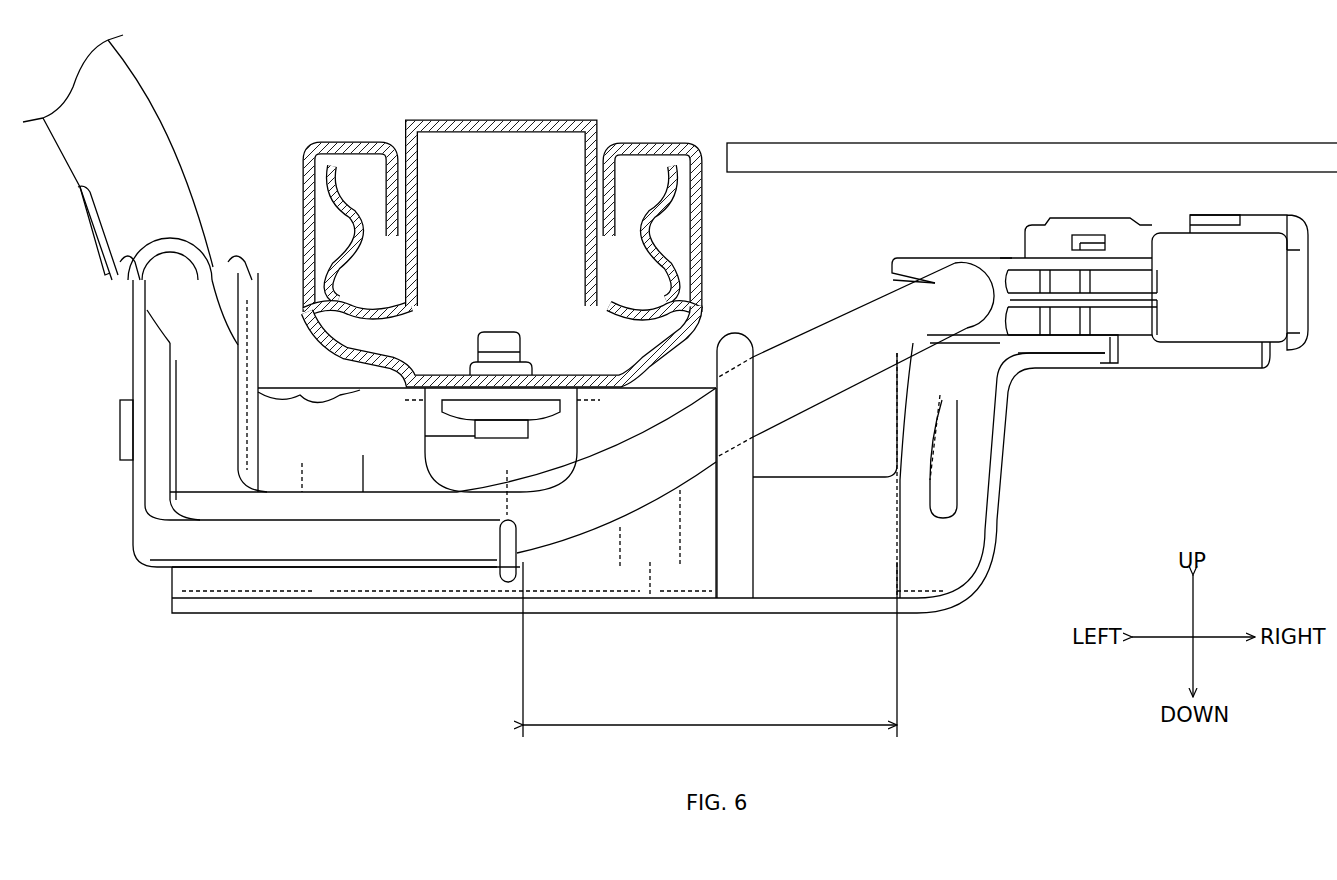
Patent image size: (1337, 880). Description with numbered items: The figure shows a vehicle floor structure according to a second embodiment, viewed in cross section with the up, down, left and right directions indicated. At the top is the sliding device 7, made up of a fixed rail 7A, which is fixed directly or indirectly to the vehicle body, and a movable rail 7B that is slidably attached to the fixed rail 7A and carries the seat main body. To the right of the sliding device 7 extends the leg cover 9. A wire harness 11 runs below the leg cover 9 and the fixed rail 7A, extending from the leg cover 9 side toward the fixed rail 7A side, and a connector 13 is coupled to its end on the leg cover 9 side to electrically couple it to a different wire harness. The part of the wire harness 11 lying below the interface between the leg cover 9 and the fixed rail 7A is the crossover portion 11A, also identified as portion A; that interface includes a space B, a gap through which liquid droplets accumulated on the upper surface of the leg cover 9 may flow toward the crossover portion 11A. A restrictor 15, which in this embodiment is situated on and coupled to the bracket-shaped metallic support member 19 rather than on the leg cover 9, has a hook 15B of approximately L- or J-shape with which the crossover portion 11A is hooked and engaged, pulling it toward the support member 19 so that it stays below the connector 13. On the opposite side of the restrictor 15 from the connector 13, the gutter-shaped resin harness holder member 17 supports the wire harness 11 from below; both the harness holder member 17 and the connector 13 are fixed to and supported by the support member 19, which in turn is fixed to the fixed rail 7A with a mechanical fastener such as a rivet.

The sliding device 7 is at (502, 196).
The fixed rail 7A is at (655, 144).
The movable rail 7B is at (553, 120).
The leg cover 9 is at (995, 142).
The wire harness 11 is at (725, 466).
The crossover portion 11A is at (777, 420).
The connector 13 is at (1190, 372).
The restrictor 15 is at (888, 418).
The hook 15B is at (738, 334).
The harness holder member 17 is at (268, 547).
The support member 19 is at (428, 615).
The portion A is at (710, 649).
The space B is at (712, 183).